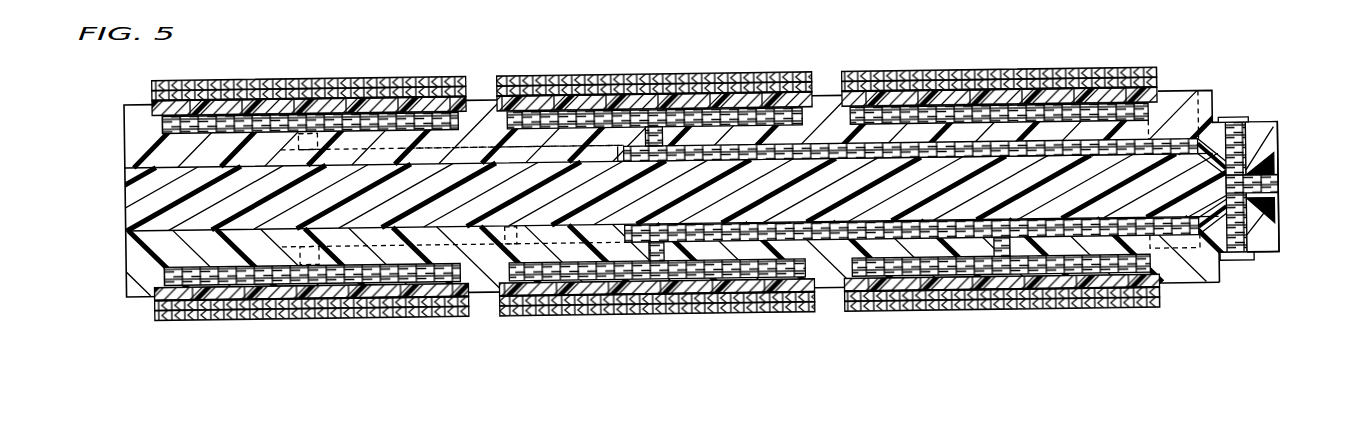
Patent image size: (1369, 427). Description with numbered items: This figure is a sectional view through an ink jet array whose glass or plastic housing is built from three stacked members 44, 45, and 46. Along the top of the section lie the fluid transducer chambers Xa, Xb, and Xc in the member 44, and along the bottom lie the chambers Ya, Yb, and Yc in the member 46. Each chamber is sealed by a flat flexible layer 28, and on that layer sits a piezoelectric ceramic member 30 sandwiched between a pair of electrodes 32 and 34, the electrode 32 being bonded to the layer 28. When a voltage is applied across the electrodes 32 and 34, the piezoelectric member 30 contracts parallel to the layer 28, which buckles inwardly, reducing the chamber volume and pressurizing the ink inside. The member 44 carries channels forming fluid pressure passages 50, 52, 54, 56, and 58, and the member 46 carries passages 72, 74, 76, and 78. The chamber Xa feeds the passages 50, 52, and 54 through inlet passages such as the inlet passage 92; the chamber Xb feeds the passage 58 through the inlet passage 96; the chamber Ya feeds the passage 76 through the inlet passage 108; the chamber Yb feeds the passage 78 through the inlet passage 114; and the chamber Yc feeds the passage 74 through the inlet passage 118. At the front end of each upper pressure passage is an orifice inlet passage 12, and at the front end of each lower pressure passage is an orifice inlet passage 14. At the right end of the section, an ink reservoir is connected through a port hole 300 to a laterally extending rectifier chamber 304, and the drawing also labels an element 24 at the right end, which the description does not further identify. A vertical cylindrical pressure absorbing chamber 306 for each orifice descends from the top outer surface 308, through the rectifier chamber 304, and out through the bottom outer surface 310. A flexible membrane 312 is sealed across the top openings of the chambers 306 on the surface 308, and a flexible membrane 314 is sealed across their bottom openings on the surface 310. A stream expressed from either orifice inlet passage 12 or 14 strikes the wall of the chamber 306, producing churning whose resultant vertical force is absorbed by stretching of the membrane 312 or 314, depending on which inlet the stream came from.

The orifice inlet passage 12 is at (1197, 163).
The orifice inlet passage 14 is at (1190, 197).
The connector contact tab 24 is at (1277, 184).
The flat flexible layer 28 is at (150, 110).
The piezoelectric ceramic member 30 is at (249, 93).
The electrode 32 is at (152, 100).
The electrode 34 is at (216, 82).
The housing member 44 is at (1180, 97).
The housing member 45 is at (143, 194).
The housing member 46 is at (1208, 275).
The fluid pressure passage 50 is at (562, 146).
The fluid pressure passage 52 is at (451, 147).
The fluid pressure passage 54 is at (457, 169).
The fluid pressure passage 56 is at (493, 230).
The fluid pressure passage 58 is at (773, 152).
The fluid pressure passage 72 is at (594, 165).
The fluid pressure passage 74 is at (943, 226).
The fluid pressure passage 76 is at (510, 234).
The fluid pressure passage 78 is at (777, 234).
The inlet passage 92 is at (334, 113).
The inlet passage 96 is at (656, 135).
The inlet passage 108 is at (298, 257).
The inlet passage 114 is at (668, 250).
The inlet passage 118 is at (1002, 250).
The port hole 300 is at (1172, 292).
The rectifier chamber 304 is at (1246, 167).
The pressure absorbing chamber 306 is at (1272, 130).
The top outer surface 308 is at (1263, 122).
The bottom outer surface 310 is at (1267, 253).
The flexible membrane 312 is at (1237, 117).
The flexible membrane 314 is at (1247, 260).
The fluid transducer chamber Xa is at (400, 124).
The fluid transducer chamber Xb is at (738, 120).
The fluid transducer chamber Xc is at (1090, 112).
The fluid transducer chamber Ya is at (421, 270).
The fluid transducer chamber Yb is at (738, 274).
The fluid transducer chamber Yc is at (1085, 265).